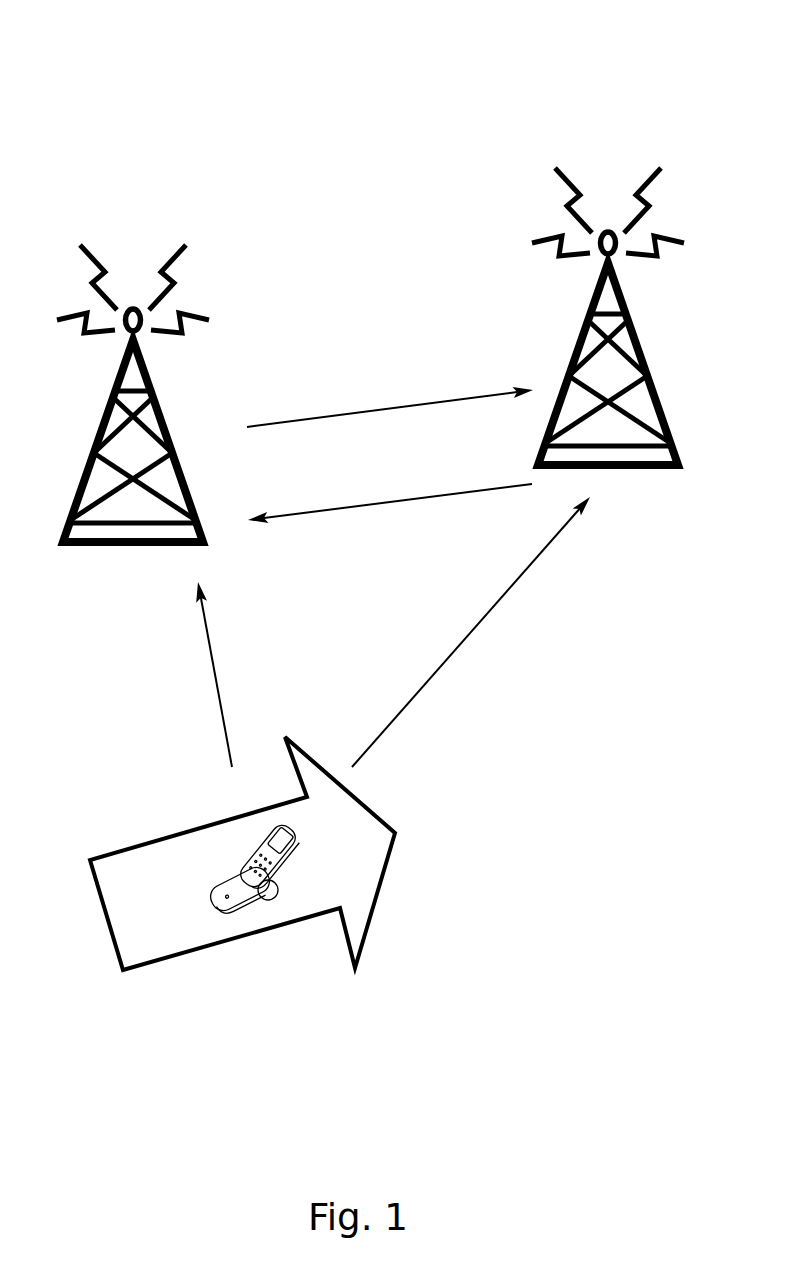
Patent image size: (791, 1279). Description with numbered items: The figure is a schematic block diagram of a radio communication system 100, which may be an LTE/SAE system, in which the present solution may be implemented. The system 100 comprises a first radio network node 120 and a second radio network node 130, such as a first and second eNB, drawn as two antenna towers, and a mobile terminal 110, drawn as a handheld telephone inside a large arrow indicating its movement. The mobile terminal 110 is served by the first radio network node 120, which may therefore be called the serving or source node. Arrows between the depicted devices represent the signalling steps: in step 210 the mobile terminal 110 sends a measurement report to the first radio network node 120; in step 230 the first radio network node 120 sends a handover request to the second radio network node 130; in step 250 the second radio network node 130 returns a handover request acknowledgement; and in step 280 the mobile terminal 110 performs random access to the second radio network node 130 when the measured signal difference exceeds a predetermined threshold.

The radio communication system 100 is at (225, 108).
The mobile terminal 110 is at (242, 853).
The first radio network node 120 is at (112, 393).
The second radio network node 130 is at (629, 316).
The step of sending a measurement report 210 is at (182, 674).
The step of sending a handover request 230 is at (390, 399).
The step of sending a handover request acknowledgement 250 is at (390, 482).
The step of performing random access 280 is at (471, 632).